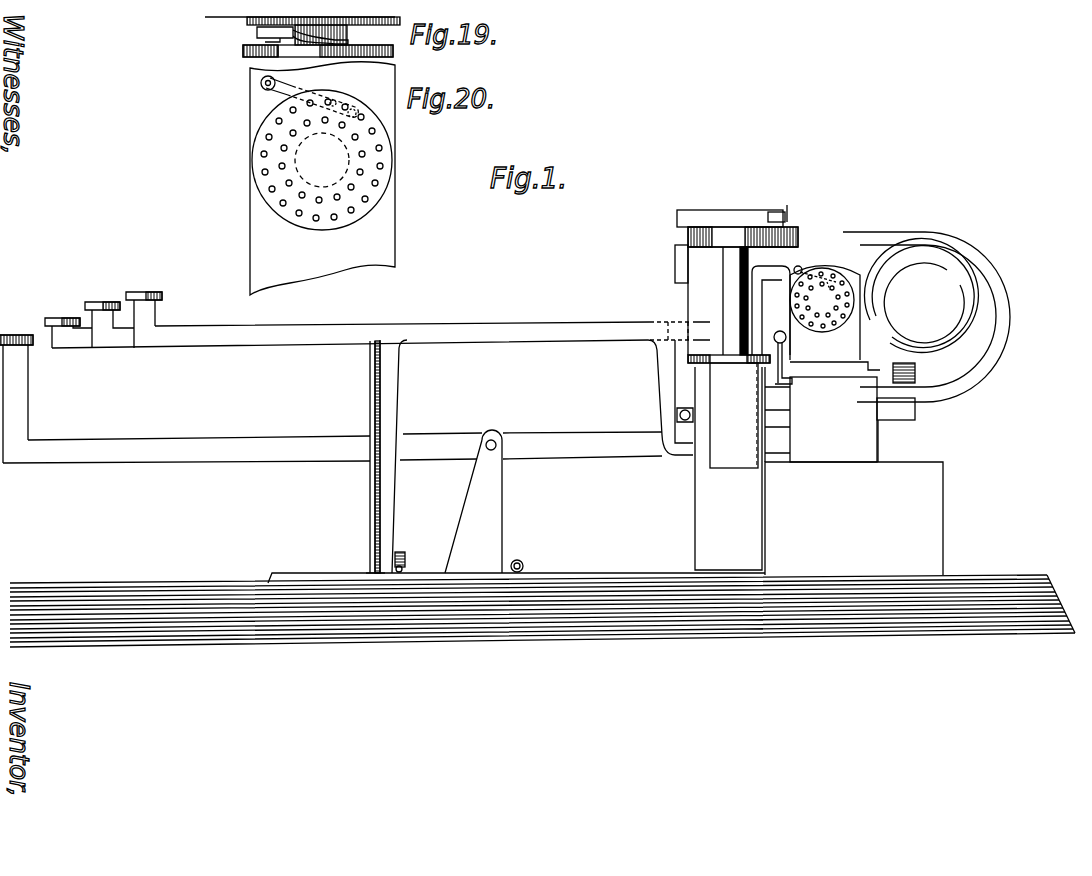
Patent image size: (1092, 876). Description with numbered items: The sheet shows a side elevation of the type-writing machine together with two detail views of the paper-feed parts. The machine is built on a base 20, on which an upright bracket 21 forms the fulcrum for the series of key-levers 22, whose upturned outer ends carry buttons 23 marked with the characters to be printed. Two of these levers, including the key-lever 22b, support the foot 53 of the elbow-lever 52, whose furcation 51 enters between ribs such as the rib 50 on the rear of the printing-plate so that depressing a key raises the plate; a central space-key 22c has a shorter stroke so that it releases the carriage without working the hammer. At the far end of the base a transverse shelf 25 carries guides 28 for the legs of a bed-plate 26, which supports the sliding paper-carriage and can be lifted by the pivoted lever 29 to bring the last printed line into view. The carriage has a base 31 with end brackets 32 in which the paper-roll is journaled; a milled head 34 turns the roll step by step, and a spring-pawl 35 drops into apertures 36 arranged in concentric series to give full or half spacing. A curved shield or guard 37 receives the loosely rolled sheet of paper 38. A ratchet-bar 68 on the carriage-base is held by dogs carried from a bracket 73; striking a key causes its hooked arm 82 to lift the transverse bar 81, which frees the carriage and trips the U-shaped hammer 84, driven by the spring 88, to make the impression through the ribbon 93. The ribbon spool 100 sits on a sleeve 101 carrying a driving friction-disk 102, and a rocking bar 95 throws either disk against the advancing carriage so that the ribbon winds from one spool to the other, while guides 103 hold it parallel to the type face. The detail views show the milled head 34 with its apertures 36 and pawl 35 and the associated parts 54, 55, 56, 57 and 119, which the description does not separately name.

In FIG. 1, the base 20 is at (542, 611).
In FIG. 1, the upright bracket 21 is at (370, 390).
In FIG. 1, the key-levers 22 is at (442, 330).
In FIG. 1, the key-lever 22b is at (672, 328).
In FIG. 1, the space-key 22c is at (670, 417).
In FIG. 1, the buttons 23 is at (147, 299).
In FIG. 1, the shelf 25 is at (900, 462).
In FIG. 1, the bed-plate 26 is at (858, 372).
In FIG. 1, the guides 28 is at (821, 414).
In FIG. 1, the pivoted lever 29 is at (440, 434).
In FIG. 1, the carriage base 31 is at (812, 362).
In FIG. 19, the brackets 32 is at (247, 18).
In FIG. 20, the brackets 32 is at (252, 124).
In FIG. 1, the brackets 32 is at (822, 306).
In FIG. 19, the milled head 34 is at (243, 52).
In FIG. 20, the milled head 34 is at (262, 188).
In FIG. 1, the milled head 34 is at (833, 326).
In FIG. 19, the spring-pawl 35 is at (303, 57).
In FIG. 20, the spring-pawl 35 is at (290, 97).
In FIG. 1, the spring-pawl 35 is at (808, 268).
In FIG. 20, the apertures 36 is at (278, 157).
In FIG. 1, the apertures 36 is at (829, 282).
In FIG. 1, the shield or guard 37 is at (871, 270).
In FIG. 1, the sheet of paper 38 is at (942, 326).
In FIG. 1, the rib 50 is at (773, 212).
In FIG. 1, the furcation 51 is at (792, 222).
In FIG. 1, the elbow-lever 52 is at (725, 218).
In FIG. 1, the foot 53 is at (678, 322).
In FIG. 1, the pivoted arm 54 is at (399, 485).
In FIG. 1, the base plate 55 is at (406, 557).
In FIG. 1, the roller 56 is at (404, 569).
In FIG. 1, the roller 57 is at (524, 565).
In FIG. 1, the ratchet-bar 68 is at (826, 368).
In FIG. 1, the bracket 73 is at (900, 416).
In FIG. 1, the bar or rod 81 is at (680, 417).
In FIG. 1, the hooked arms 82 is at (660, 378).
In FIG. 1, the hammer 84 is at (887, 234).
In FIG. 1, the spring 88 is at (912, 382).
In FIG. 1, the ribbon 93 is at (790, 380).
In FIG. 1, the rocking bar 95 is at (734, 415).
In FIG. 1, the spool 100 is at (698, 240).
In FIG. 1, the sleeve 101 is at (728, 329).
In FIG. 1, the driving friction-disk 102 is at (742, 363).
In FIG. 1, the guides 103 is at (825, 286).
In FIG. 1, the pin 119 is at (787, 206).